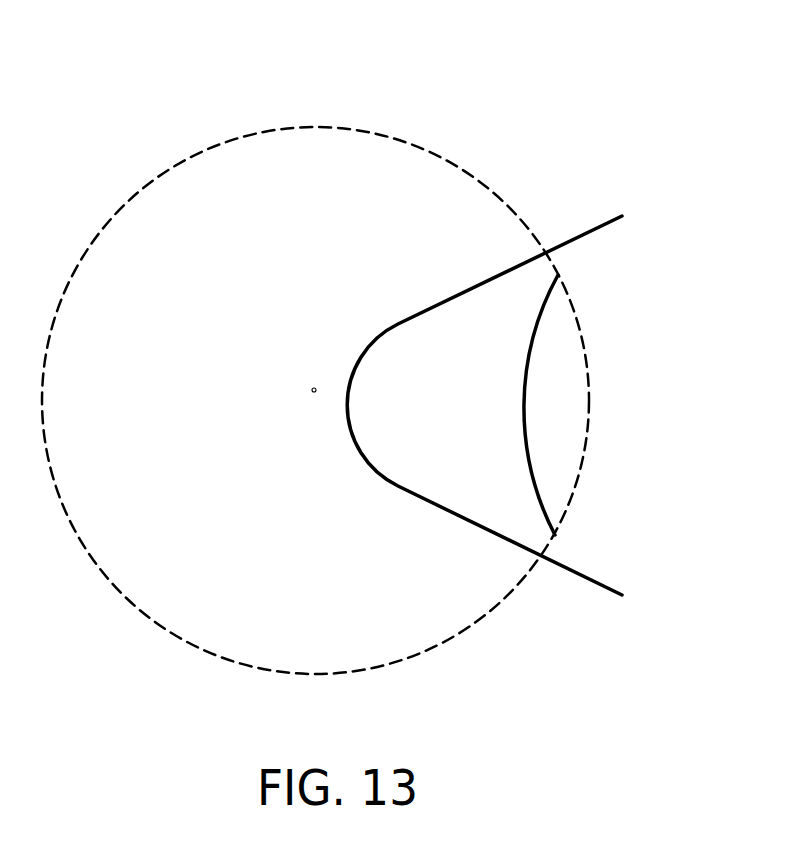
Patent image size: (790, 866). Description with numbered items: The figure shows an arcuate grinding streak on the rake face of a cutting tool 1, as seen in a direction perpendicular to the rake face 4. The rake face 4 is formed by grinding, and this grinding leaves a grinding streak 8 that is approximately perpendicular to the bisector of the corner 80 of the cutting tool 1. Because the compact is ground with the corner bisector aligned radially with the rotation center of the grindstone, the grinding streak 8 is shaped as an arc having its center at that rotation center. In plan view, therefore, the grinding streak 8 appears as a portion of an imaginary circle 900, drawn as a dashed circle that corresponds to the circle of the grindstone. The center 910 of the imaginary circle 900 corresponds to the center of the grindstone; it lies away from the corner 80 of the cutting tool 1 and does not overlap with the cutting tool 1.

The cutting tool 1 is at (636, 128).
The rake face 4 is at (580, 235).
The grinding streak 8 is at (588, 432).
The corner 80 is at (360, 356).
The imaginary circle 900 is at (172, 168).
The center of the imaginary circle 910 is at (311, 390).